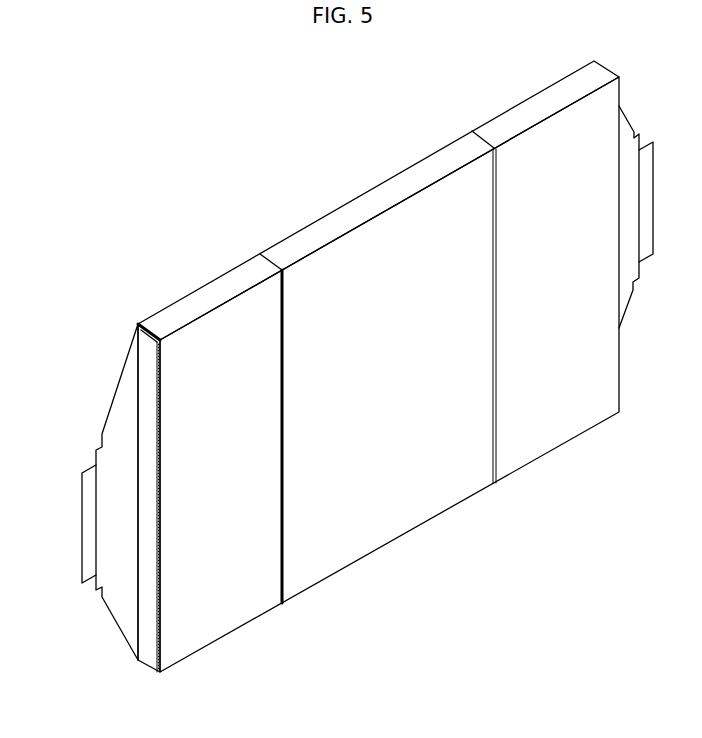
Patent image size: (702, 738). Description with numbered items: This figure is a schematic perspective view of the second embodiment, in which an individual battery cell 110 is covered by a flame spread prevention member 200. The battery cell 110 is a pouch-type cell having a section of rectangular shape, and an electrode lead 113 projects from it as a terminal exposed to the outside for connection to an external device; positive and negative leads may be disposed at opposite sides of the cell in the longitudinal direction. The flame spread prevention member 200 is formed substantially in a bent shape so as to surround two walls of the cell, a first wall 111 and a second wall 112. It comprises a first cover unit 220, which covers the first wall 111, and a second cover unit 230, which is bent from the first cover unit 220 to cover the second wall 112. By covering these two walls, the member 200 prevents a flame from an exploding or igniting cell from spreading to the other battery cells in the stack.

The flame spread prevention member 200 is at (378, 366).
The first cover unit 220 is at (230, 283).
The second cover unit 230 is at (235, 613).
The battery cell 110 is at (340, 389).
The first wall 111 is at (143, 337).
The second wall 112 is at (160, 395).
The electrode lead 113 is at (88, 508).